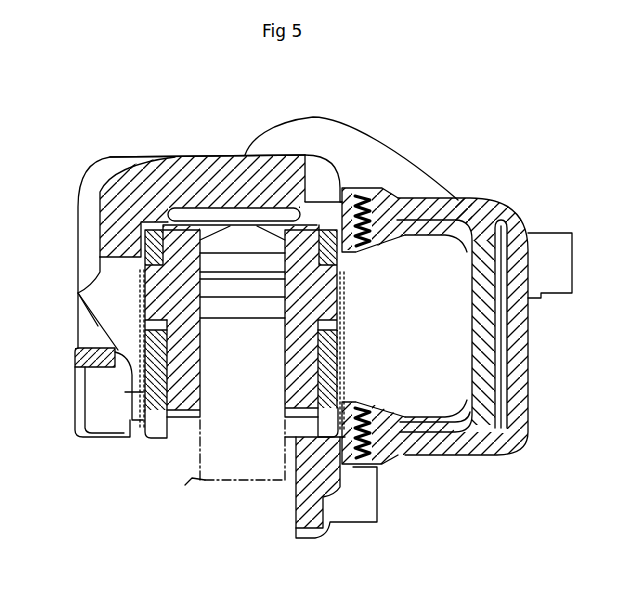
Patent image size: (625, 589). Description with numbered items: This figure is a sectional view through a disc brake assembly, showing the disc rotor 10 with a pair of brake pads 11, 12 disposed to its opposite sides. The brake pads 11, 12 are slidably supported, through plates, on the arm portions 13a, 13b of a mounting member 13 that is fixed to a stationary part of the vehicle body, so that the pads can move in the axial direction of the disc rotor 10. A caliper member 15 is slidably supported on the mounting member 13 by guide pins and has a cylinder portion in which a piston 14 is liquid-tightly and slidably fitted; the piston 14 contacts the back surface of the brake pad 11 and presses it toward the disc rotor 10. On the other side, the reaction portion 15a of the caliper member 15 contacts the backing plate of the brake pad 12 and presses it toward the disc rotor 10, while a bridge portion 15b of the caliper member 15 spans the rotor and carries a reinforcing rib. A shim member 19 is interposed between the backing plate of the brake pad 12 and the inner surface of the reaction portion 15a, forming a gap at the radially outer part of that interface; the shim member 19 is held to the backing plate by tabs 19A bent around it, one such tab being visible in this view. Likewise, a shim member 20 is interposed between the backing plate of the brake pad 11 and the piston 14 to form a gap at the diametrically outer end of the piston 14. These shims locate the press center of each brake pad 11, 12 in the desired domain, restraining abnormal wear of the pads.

The disc rotor 10 is at (258, 470).
The brake pad 11 is at (290, 352).
The brake pad 12 is at (198, 380).
The mounting member 13 is at (315, 531).
The arm portion 13a is at (307, 435).
The arm portion 13b is at (127, 428).
The piston 14 is at (470, 425).
The caliper member 15 is at (394, 165).
The reaction portion 15a is at (110, 322).
The bridge portion 15b is at (207, 137).
The shim member 19 is at (142, 286).
The tab 19A is at (158, 441).
The shim member 20 is at (341, 370).